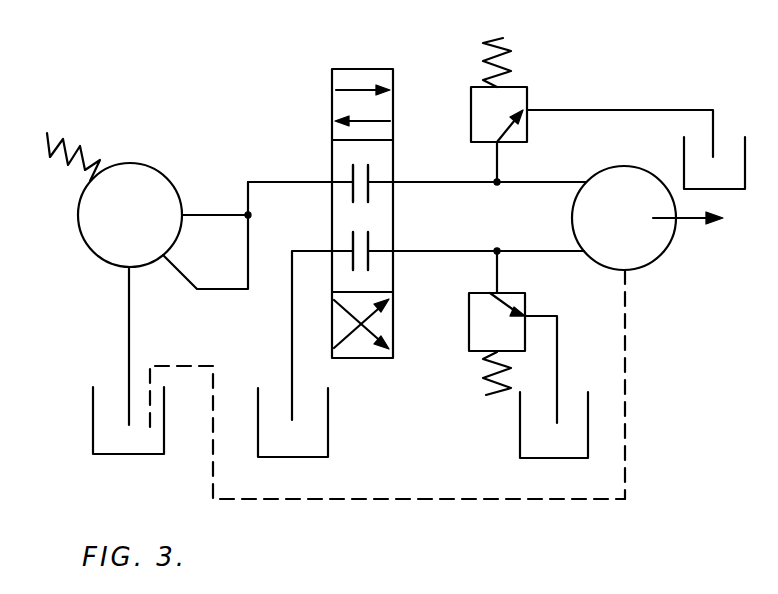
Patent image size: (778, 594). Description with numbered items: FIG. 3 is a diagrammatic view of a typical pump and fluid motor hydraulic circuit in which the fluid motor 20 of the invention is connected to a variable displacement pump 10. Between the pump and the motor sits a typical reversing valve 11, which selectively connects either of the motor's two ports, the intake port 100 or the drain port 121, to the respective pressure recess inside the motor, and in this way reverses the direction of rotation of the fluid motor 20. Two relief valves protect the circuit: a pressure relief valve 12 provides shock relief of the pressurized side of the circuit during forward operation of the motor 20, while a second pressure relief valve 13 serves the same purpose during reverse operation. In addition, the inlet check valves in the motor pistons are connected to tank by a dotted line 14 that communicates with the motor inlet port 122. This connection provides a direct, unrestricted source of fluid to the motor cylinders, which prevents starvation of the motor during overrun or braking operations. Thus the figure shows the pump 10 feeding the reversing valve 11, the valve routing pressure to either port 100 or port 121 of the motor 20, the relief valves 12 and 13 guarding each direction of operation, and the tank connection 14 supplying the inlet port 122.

The variable displacement pump 10 is at (151, 162).
The reversing valve 11 is at (326, 153).
The pressure relief valve 12 is at (536, 82).
The second pressure relief valve 13 is at (466, 301).
The dotted line 14 is at (480, 502).
The fluid motor 20 is at (664, 270).
The intake port 100 is at (584, 182).
The drain port 121 is at (584, 256).
The motor inlet port 122 is at (632, 271).